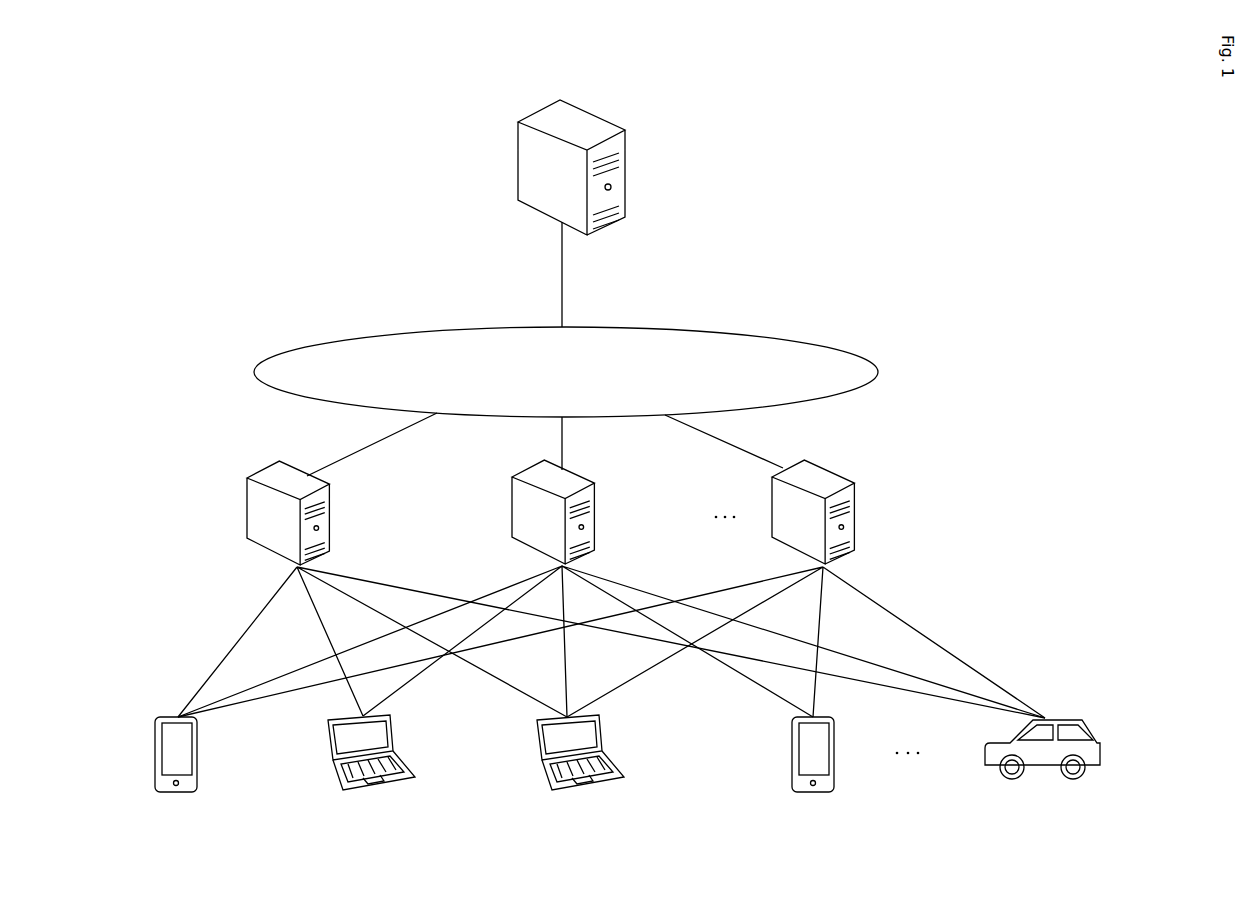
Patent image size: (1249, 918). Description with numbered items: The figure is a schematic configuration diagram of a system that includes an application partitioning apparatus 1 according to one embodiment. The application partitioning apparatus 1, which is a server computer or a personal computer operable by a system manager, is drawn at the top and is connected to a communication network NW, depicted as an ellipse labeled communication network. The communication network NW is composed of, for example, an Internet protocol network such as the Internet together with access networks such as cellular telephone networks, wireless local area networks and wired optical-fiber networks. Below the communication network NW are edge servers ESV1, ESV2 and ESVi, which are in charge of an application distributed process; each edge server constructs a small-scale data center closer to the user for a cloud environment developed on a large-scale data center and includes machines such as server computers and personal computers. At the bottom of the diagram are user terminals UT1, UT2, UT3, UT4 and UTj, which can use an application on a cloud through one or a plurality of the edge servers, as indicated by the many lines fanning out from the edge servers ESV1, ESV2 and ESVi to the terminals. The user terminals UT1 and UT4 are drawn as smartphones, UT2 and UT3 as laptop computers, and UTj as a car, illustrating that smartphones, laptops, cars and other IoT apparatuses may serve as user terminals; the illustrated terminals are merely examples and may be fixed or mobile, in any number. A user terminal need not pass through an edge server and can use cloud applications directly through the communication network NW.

The application partitioning apparatus 1 is at (588, 110).
The communication network NW is at (778, 338).
The edge server ESV1 is at (330, 517).
The edge server ESV2 is at (594, 518).
The edge server ESVi is at (856, 518).
The user terminal UT1 is at (175, 793).
The user terminal UT2 is at (380, 790).
The user terminal UT3 is at (588, 787).
The user terminal UT4 is at (813, 792).
The user terminal UTj is at (1043, 770).